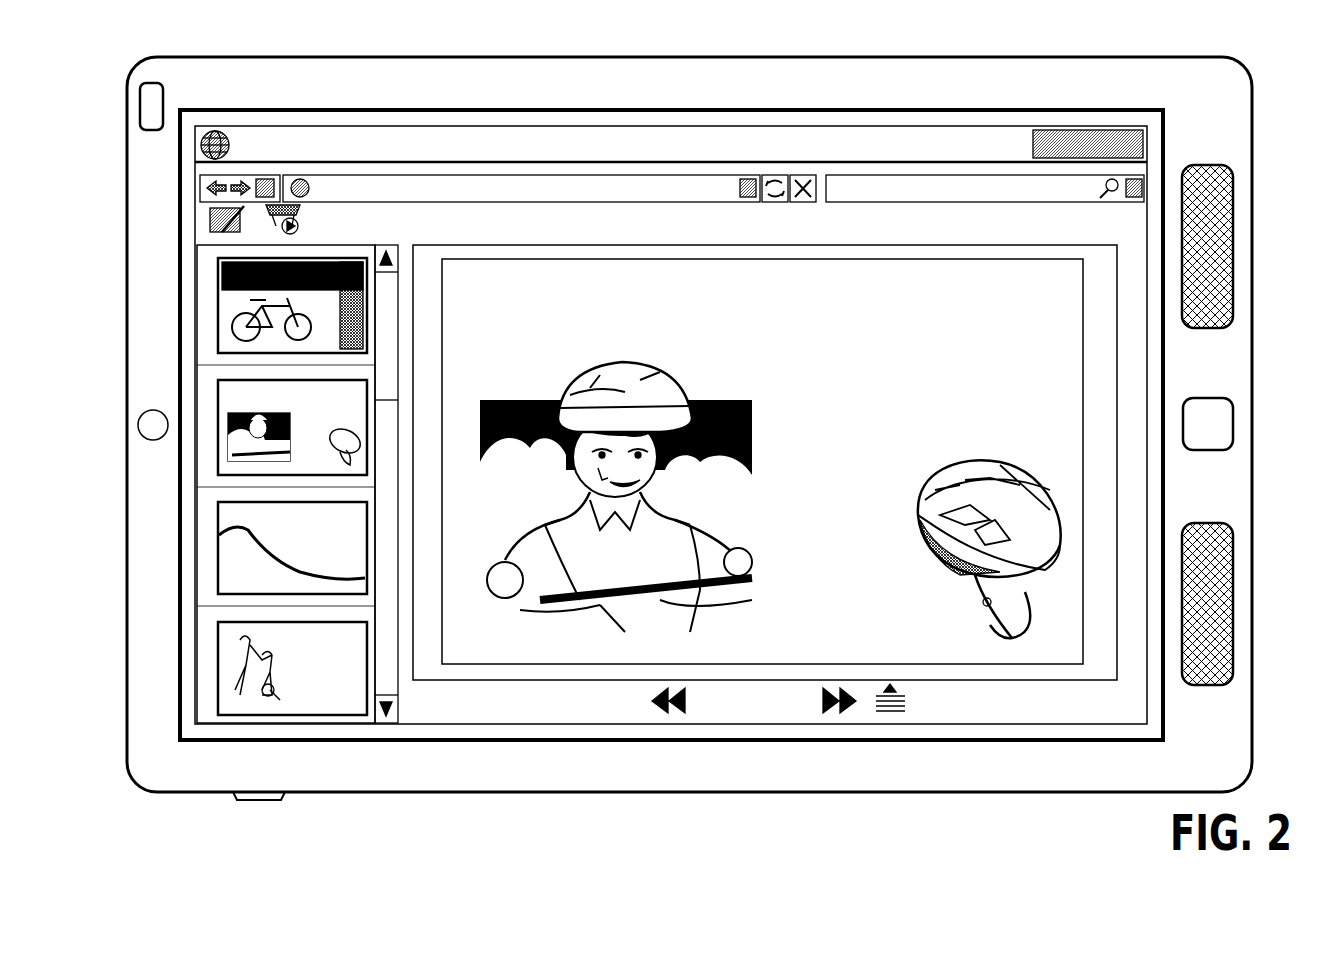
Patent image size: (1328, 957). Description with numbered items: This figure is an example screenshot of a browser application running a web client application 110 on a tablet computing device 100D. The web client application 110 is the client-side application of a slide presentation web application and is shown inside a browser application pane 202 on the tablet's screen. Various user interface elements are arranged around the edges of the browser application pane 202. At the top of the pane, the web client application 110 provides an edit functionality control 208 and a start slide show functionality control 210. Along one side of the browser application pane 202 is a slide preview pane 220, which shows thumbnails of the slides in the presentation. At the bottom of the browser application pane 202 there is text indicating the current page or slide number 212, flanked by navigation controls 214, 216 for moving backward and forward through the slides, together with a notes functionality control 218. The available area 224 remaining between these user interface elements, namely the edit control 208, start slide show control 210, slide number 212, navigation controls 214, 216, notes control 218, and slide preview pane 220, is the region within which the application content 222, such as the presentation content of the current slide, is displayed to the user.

The tablet computing device 100D is at (1228, 78).
The browser application pane 202 is at (195, 152).
The edit functionality control 208 is at (210, 218).
The start slide show functionality control 210 is at (300, 218).
The web client application 110 is at (821, 220).
The slide preview pane 220 is at (197, 293).
The application content 222 is at (1070, 355).
The available area 224 is at (1107, 391).
The current page or slide number 212 is at (762, 712).
The navigation control 214 is at (680, 708).
The navigation control 216 is at (843, 712).
The notes functionality control 218 is at (957, 712).